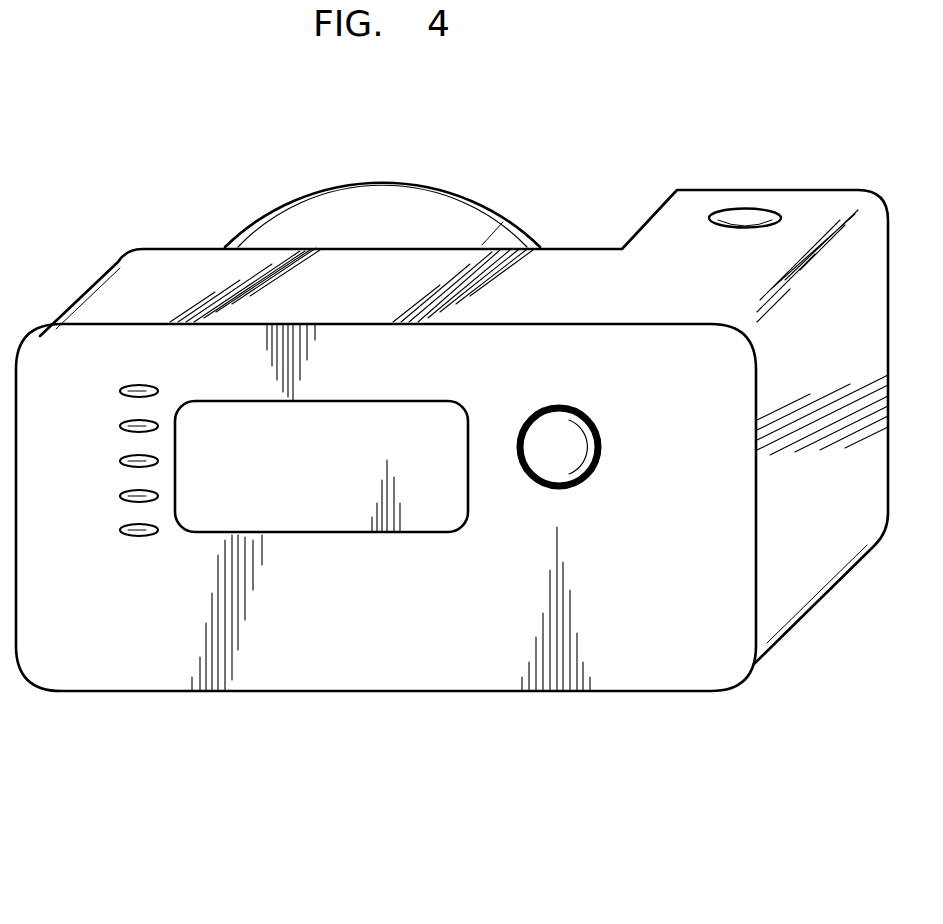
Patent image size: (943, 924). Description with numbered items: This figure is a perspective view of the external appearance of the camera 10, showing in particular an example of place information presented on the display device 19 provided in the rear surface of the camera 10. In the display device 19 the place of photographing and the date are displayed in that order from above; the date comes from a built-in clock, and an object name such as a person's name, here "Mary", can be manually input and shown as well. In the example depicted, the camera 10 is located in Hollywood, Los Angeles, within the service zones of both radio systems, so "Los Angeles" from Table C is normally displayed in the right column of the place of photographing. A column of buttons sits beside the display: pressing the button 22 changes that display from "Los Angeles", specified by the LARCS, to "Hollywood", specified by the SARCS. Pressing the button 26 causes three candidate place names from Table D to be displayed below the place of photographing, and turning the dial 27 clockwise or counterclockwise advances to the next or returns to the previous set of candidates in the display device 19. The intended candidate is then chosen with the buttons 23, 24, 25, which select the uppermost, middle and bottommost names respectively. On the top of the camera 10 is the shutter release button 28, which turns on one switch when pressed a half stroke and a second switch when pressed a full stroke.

The camera 10 is at (350, 692).
The display device 19 is at (322, 533).
The button 22 is at (124, 389).
The button 23 is at (124, 424).
The button 24 is at (124, 459).
The button 25 is at (124, 494).
The button 26 is at (124, 528).
The dial 27 is at (601, 446).
The shutter release button 28 is at (745, 209).